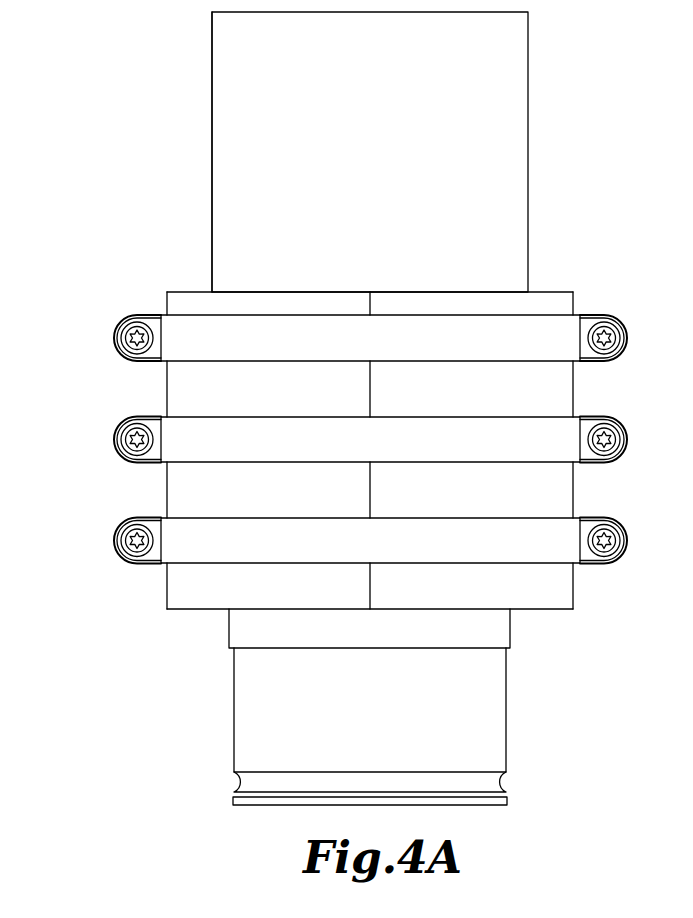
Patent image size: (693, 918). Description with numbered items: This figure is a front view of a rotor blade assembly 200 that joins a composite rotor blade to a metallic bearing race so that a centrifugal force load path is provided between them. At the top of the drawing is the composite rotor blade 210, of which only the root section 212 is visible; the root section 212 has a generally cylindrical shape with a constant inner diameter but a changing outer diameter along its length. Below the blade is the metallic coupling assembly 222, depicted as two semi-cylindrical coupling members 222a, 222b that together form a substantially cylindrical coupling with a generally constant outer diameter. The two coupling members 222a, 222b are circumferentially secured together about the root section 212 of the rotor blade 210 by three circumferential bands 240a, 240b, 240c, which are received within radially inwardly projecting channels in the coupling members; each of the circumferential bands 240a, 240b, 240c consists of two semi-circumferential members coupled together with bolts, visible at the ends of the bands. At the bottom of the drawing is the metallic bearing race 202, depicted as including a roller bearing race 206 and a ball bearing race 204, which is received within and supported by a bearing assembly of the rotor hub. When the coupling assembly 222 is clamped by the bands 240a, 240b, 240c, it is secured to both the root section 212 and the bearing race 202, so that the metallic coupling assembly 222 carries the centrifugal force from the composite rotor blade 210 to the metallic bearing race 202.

The rotor blade assembly 200 is at (569, 169).
The composite rotor blade 210 is at (218, 78).
The root section 212 is at (218, 153).
The metallic coupling assembly 222 is at (312, 450).
The semi-cylindrical coupling member 222a is at (285, 506).
The semi-cylindrical coupling member 222b is at (500, 506).
The circumferential band 240a is at (522, 331).
The circumferential band 240b is at (522, 432).
The circumferential band 240c is at (522, 535).
The roller bearing race 206 is at (238, 632).
The metallic bearing race 202 is at (238, 697).
The ball bearing race 204 is at (245, 783).